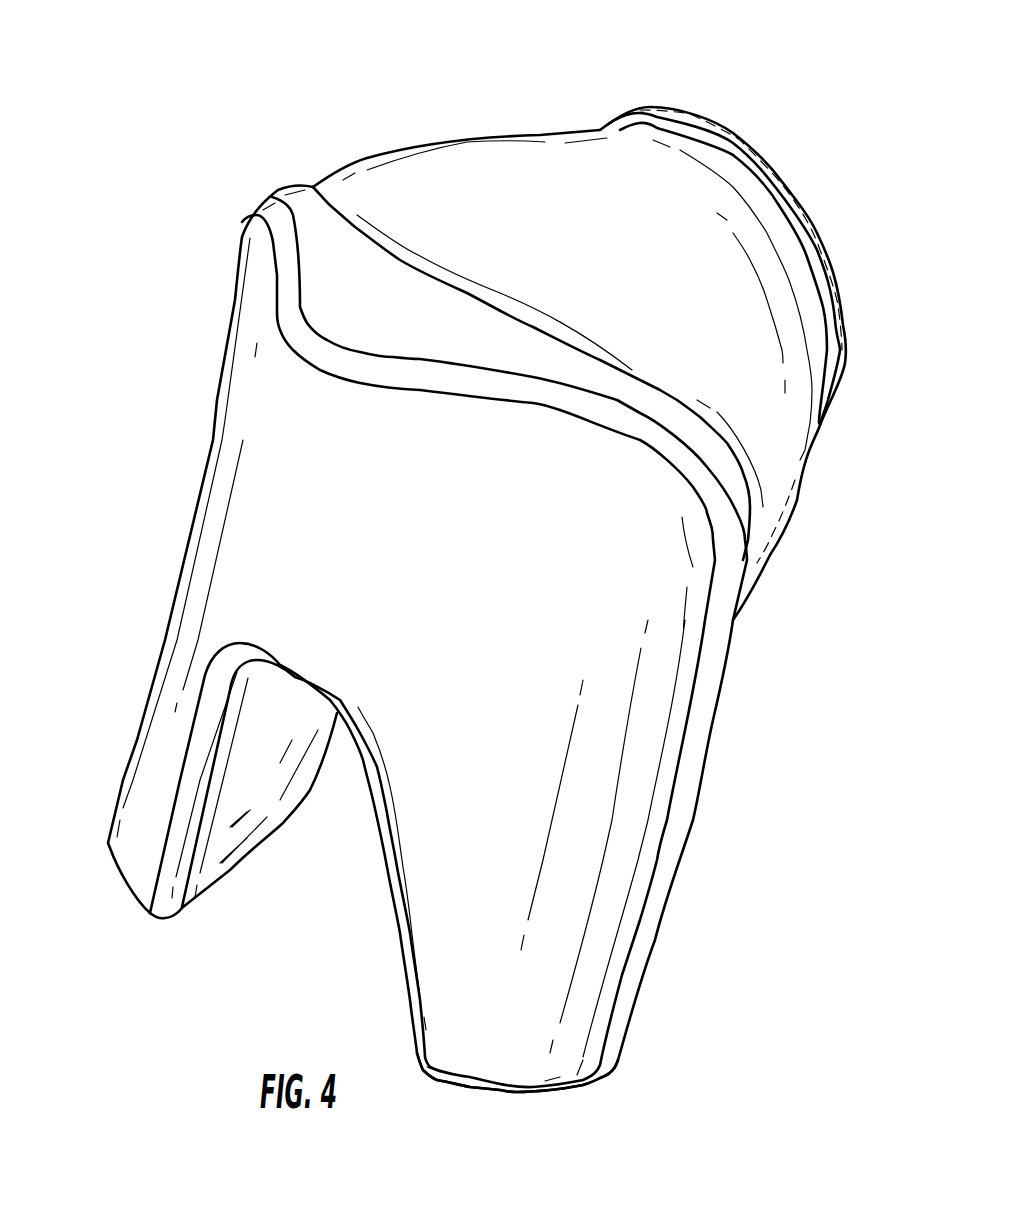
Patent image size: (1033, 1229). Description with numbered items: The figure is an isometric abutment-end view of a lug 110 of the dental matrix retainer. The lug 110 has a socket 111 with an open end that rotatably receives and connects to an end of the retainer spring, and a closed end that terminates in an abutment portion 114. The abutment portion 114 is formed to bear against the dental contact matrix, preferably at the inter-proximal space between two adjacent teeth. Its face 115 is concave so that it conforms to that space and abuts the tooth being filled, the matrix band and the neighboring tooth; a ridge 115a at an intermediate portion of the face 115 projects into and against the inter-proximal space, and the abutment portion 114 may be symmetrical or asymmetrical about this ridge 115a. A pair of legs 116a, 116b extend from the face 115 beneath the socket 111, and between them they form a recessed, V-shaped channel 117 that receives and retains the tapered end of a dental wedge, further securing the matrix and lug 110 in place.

The lug 110 is at (330, 115).
The socket 111 is at (525, 177).
The abutment portion 114 is at (678, 532).
The face 115 is at (600, 675).
The ridge 115a is at (318, 392).
The leg 116a is at (570, 1020).
The leg 116b is at (132, 843).
The recessed channel 117 is at (310, 847).